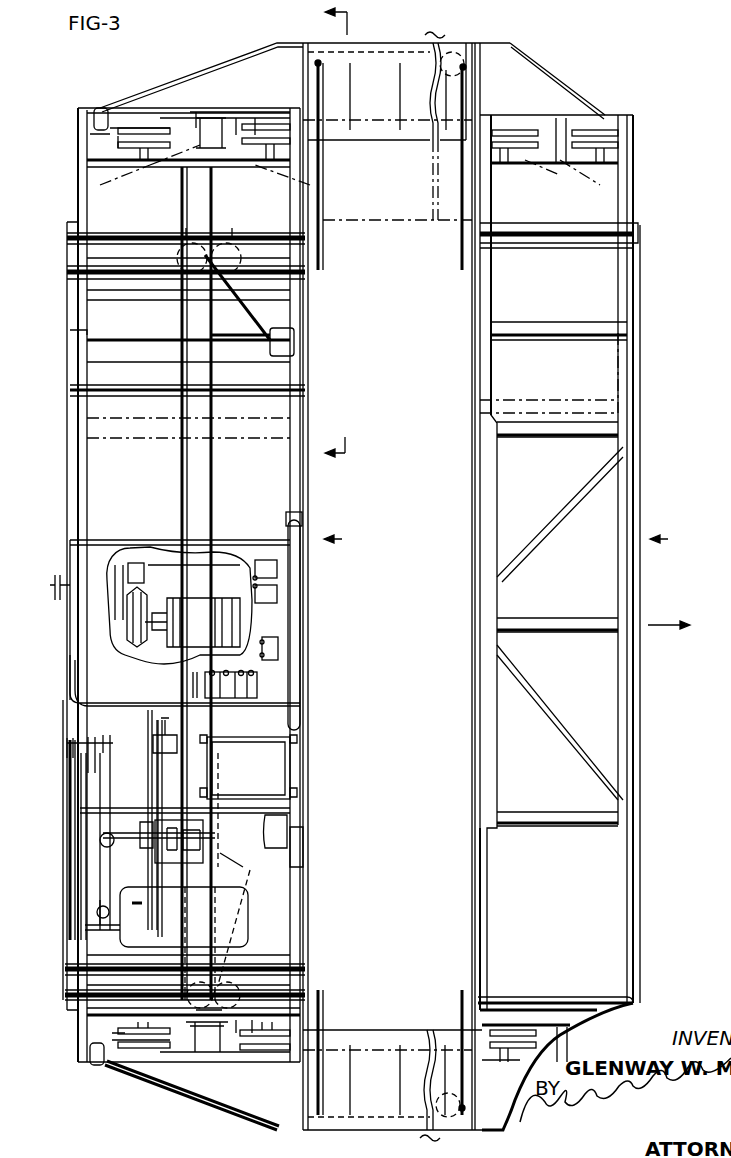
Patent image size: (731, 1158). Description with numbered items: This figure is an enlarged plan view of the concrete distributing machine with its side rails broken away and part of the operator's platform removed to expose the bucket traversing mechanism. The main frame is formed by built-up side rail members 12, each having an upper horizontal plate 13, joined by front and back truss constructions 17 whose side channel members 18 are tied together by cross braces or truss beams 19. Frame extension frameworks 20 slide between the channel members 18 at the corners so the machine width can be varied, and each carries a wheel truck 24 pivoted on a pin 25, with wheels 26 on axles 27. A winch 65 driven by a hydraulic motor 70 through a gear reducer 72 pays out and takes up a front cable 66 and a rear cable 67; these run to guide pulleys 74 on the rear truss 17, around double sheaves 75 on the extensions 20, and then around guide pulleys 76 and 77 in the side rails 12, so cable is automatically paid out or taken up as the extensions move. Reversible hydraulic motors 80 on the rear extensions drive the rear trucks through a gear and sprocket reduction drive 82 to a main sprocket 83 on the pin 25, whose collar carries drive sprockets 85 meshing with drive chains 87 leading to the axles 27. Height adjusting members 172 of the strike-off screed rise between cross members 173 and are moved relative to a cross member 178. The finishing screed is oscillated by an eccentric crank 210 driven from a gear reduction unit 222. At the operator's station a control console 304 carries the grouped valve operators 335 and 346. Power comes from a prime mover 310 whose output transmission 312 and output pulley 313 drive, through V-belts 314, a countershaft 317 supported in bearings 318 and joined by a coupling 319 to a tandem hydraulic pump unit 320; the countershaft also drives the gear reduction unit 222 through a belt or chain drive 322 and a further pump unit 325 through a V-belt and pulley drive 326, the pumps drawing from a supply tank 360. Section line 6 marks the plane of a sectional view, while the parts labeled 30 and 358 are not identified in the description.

The section line 6- 6 is at (344, 239).
The side rail member 12 is at (376, 132).
The upper plate 13 is at (390, 62).
The truss construction 17 is at (510, 581).
The channel member 18 is at (68, 342).
The truss beam 19 is at (540, 550).
The frame extension member 20 is at (82, 203).
The wheel truck 24 is at (152, 106).
The pin 25 is at (206, 150).
The wheel 26 is at (152, 150).
The axle 27 is at (146, 160).
The guide rails 30 is at (310, 478).
The winch 65 is at (230, 630).
The cable 66 is at (214, 485).
The cable 67 is at (180, 487).
The hydraulic motor 70 is at (135, 568).
The gear reducer 72 is at (130, 640).
The guide pulley 74 is at (226, 243).
The double sheave 75 is at (296, 345).
The guide pulley 76 is at (453, 55).
The guide pulley 77 is at (290, 75).
The hydraulic motor 80 is at (98, 108).
The gear and sprocket reduction drive 82 is at (110, 135).
The main sprocket 83 is at (230, 133).
The drive sprocket 85 is at (206, 1052).
The drive chain 87 is at (175, 116).
The height adjusting member 172 is at (290, 265).
The cross member 173 is at (70, 268).
The cross member 178 is at (126, 260).
The eccentric crank member 210 is at (55, 581).
The gear reduction unit 222 is at (90, 740).
The control console 304 is at (282, 665).
The prime mover 310 is at (172, 950).
The output transmission 312 is at (97, 910).
The output pulley 313 is at (90, 928).
The V-belt 314 is at (95, 880).
The countershaft 317 is at (122, 842).
The bearing 318 is at (140, 830).
The coupling 319 is at (160, 908).
The tandem hydraulic pump unit 320 is at (203, 840).
The V-belt or chain and sprocket drive 322 is at (72, 795).
The tandem hydraulic pump unit 325 is at (172, 735).
The V-belt and pulley drive 326 is at (143, 765).
The manual valve operators 335 is at (278, 592).
The valve controls 346 is at (278, 650).
The terminal block 358 is at (258, 692).
The supply tank 360 is at (192, 750).